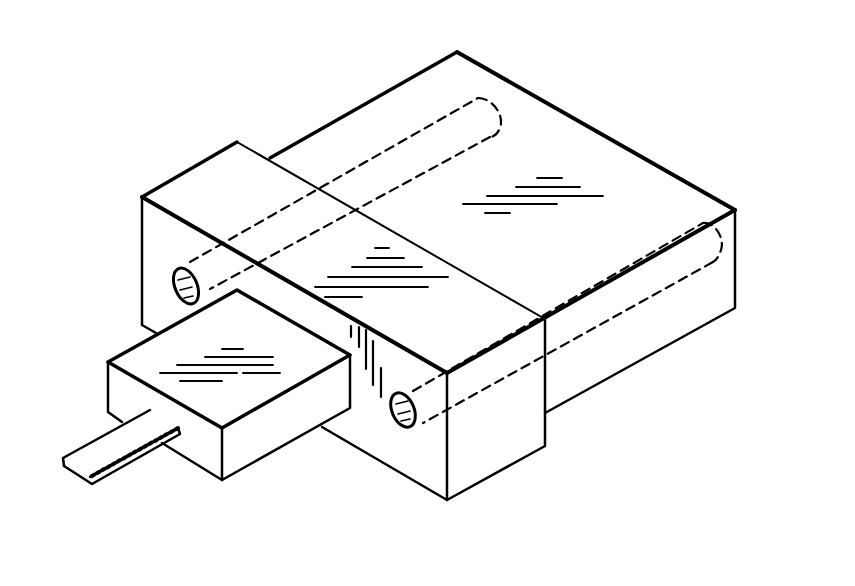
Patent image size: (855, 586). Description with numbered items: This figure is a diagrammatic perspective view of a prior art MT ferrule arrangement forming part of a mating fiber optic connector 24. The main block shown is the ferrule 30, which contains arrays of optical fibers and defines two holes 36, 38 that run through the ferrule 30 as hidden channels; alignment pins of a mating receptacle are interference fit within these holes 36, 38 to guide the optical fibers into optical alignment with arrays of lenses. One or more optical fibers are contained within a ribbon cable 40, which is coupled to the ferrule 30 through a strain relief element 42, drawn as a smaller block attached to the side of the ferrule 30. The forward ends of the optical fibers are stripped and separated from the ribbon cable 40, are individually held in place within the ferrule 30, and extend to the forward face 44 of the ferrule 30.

The mating fiber optic connector 24 is at (186, 82).
The ferrule 30 is at (385, 91).
The hole 36 is at (408, 136).
The hole 38 is at (609, 316).
The ribbon cable 40 is at (86, 444).
The strain relief element 42 is at (132, 350).
The forward face 44 is at (588, 112).